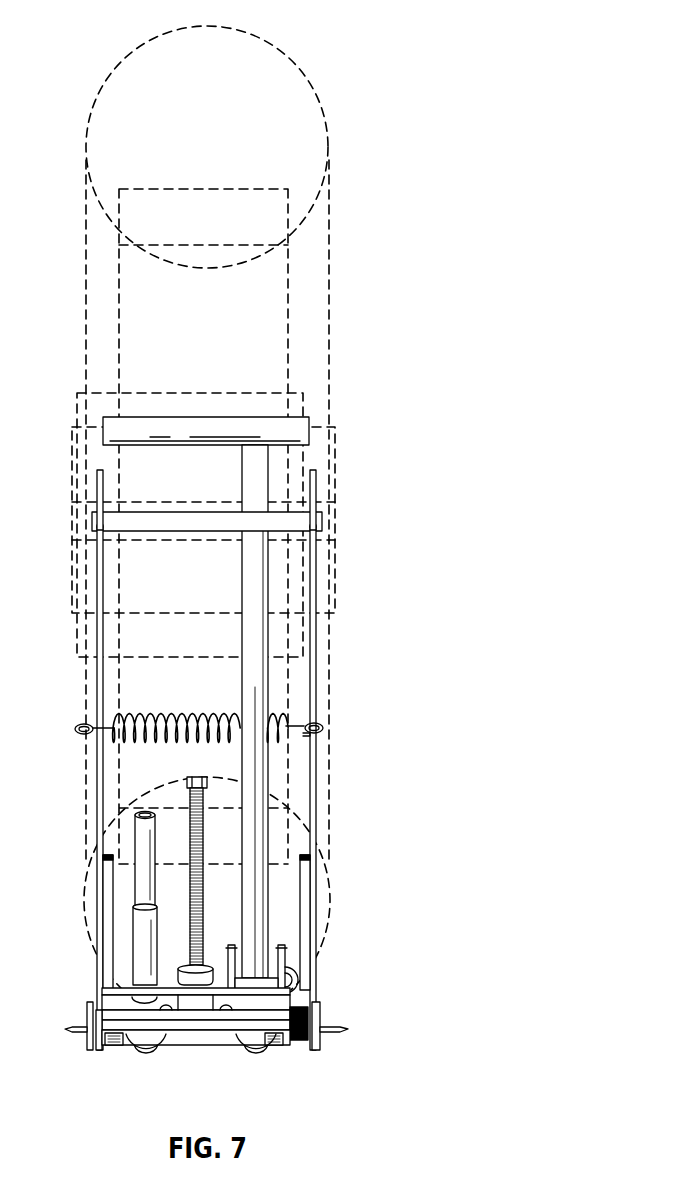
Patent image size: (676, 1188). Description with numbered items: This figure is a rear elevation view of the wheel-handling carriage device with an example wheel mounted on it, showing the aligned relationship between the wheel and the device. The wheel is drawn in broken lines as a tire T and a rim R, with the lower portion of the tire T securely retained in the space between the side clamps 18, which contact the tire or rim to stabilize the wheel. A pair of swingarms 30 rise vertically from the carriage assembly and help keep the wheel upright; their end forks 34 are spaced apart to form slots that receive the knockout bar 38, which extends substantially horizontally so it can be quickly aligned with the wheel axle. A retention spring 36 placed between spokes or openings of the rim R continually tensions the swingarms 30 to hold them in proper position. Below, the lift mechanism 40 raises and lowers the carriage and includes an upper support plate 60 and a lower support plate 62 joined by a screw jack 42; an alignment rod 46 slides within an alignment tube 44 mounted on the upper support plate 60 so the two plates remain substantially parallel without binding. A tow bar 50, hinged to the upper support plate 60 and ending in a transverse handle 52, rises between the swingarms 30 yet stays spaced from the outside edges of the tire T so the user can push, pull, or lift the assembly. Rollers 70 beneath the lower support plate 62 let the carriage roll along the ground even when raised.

The tire T is at (291, 59).
The rim R is at (290, 282).
The side clamps 18 is at (117, 884).
The swingarms 30 is at (97, 697).
The end forks 34 is at (98, 468).
The retention spring 36 is at (178, 716).
The knockout bar 38 is at (199, 520).
The lift mechanism 40 is at (287, 943).
The screw jack 42 is at (202, 878).
The alignment tube 44 is at (135, 962).
The alignment rod 46 is at (137, 843).
The tow bar 50 is at (248, 483).
The transverse handle 52 is at (145, 432).
The upper support plate 60 is at (110, 986).
The lower support plate 62 is at (205, 1022).
The rollers 70 is at (132, 1045).